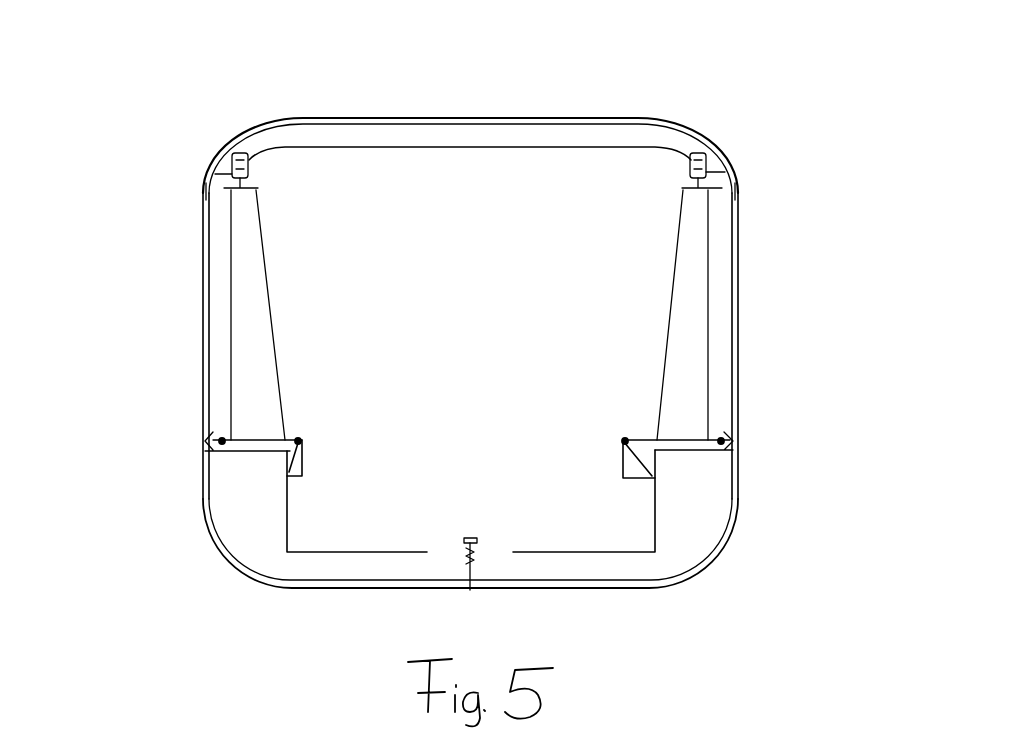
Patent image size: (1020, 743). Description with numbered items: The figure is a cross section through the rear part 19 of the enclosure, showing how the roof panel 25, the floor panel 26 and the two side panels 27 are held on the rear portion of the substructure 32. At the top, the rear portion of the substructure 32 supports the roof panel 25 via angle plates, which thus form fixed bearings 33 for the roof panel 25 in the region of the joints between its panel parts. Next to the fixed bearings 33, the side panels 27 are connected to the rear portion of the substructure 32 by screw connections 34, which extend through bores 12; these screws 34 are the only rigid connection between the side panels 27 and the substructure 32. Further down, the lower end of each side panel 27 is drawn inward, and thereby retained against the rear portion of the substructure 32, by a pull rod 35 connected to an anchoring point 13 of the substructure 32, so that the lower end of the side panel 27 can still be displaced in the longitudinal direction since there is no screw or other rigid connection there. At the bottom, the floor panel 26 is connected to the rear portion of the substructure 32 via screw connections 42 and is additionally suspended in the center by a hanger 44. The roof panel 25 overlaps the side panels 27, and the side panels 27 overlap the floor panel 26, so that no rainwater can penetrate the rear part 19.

The rear part 19 is at (746, 97).
The roof panel 25 is at (458, 135).
The floor panel 26 is at (320, 590).
The side panel 27 is at (155, 265).
The bore 12 is at (143, 155).
The fixed bearing 33 is at (690, 160).
The screw connection 34 is at (220, 180).
The substructure 32 is at (253, 308).
The pull rod 35 is at (260, 438).
The anchoring point 13 is at (618, 458).
The screw connection 42 is at (205, 458).
The hanger 44 is at (478, 552).